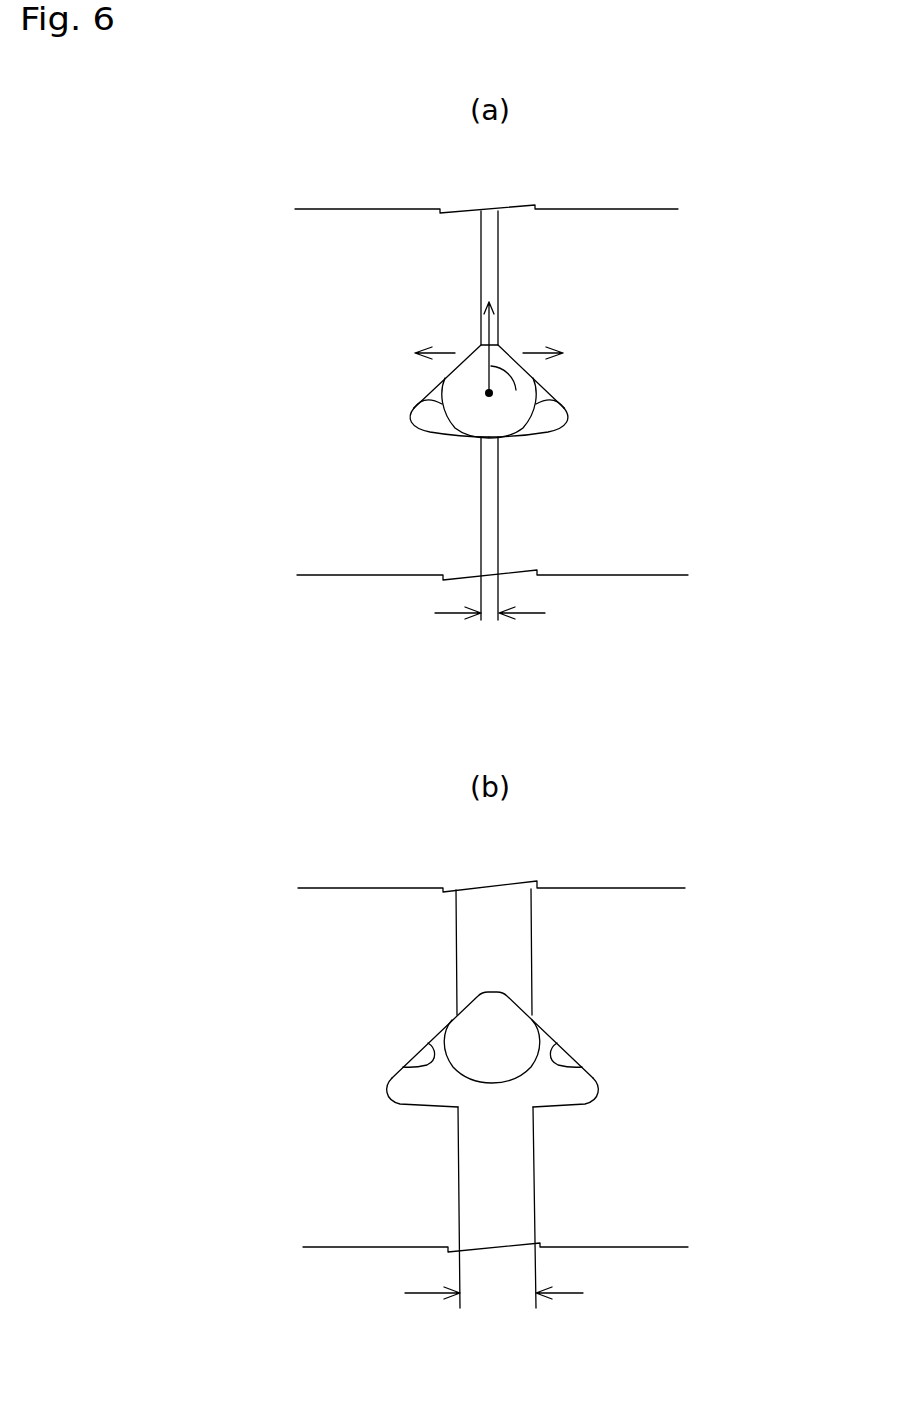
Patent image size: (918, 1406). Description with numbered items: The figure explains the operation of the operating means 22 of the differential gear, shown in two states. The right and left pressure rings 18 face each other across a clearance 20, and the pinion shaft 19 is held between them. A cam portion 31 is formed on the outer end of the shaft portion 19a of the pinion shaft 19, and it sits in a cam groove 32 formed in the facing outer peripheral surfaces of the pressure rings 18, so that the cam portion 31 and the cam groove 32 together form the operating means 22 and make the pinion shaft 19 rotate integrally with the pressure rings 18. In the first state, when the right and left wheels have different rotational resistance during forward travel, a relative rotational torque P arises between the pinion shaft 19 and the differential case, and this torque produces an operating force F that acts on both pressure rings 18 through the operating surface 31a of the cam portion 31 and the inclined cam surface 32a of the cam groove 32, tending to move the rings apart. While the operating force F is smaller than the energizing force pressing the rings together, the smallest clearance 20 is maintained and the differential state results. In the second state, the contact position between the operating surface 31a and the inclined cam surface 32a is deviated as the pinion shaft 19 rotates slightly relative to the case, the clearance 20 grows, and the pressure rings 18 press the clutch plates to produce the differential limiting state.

In FIG. 6A, the pressure ring 18 is at (392, 218).
In FIG. 6B, the pressure ring 18 is at (396, 893).
In FIG. 6A, the operating means 22 is at (700, 188).
In FIG. 6B, the operating means 22 is at (703, 887).
In FIG. 6A, the clearance 20 is at (516, 437).
In FIG. 6B, the clearance 20 is at (494, 1127).
In FIG. 6A, the pinion shaft 19 is at (490, 618).
In FIG. 6B, the pinion shaft 19 is at (499, 1295).
In FIG. 6A, the shaft portion 19a is at (490, 424).
In FIG. 6B, the shaft portion 19a is at (495, 1079).
In FIG. 6A, the cam portion 31 is at (457, 416).
In FIG. 6B, the cam portion 31 is at (492, 992).
In FIG. 6A, the operating surface 31a is at (445, 376).
In FIG. 6B, the operating surface 31a is at (450, 1022).
In FIG. 6A, the cam groove 32 is at (410, 409).
In FIG. 6B, the cam groove 32 is at (403, 1067).
In FIG. 6A, the inclined cam surface 32a is at (490, 405).
In FIG. 6B, the inclined cam surface 32a is at (495, 1045).
In FIG. 6A, the relative rotational torque P is at (504, 362).
In FIG. 6A, the operating force F is at (452, 353).